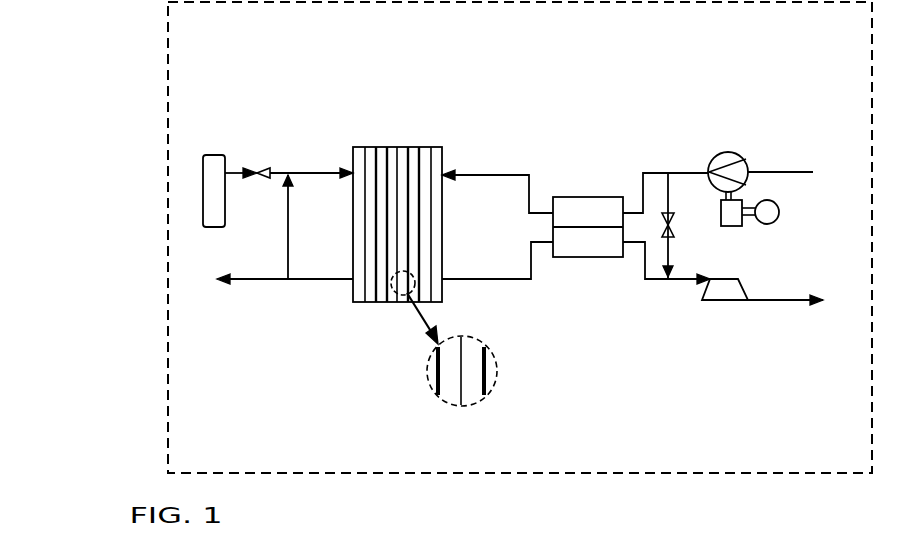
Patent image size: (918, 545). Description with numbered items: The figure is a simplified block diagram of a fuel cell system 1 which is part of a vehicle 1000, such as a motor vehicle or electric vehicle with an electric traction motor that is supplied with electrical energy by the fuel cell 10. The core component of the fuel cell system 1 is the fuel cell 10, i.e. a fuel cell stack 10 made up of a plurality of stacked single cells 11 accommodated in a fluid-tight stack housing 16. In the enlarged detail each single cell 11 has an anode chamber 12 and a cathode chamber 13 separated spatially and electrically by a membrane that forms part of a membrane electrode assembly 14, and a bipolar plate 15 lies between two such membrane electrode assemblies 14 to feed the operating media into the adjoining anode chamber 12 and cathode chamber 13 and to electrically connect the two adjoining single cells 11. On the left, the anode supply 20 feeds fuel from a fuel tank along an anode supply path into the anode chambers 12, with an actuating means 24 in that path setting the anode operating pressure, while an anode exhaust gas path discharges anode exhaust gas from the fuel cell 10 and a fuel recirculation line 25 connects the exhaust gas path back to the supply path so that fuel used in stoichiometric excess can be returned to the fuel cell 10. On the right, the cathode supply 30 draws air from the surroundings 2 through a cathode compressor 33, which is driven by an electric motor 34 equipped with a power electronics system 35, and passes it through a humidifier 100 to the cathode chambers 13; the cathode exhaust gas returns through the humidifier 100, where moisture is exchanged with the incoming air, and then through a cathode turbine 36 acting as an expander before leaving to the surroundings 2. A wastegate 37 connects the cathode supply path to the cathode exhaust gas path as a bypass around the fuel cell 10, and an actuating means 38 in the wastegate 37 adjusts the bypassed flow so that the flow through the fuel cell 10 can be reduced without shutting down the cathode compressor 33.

The vehicle 1000 is at (167, 253).
The fuel cell system 1 is at (606, 49).
The anode supply 20 is at (243, 95).
The actuating means 24 is at (248, 172).
The fuel recirculation line 25 is at (288, 221).
The surroundings 2 is at (193, 292).
The fuel cell stack 10 is at (384, 120).
The single cell 11 is at (381, 157).
The stack housing 16 is at (355, 292).
The bipolar plate 15 is at (438, 380).
The anode chamber 12 is at (450, 393).
The membrane electrode assembly 14 is at (461, 393).
The cathode chamber 13 is at (473, 390).
The cathode supply 30 is at (612, 131).
The humidifier 100 is at (593, 247).
The actuating means 38 is at (668, 237).
The wastegate 37 is at (668, 261).
The cathode compressor 33 is at (729, 152).
The electric motor 34 is at (730, 212).
The power electronics system 35 is at (767, 212).
The cathode turbine 36 is at (727, 290).